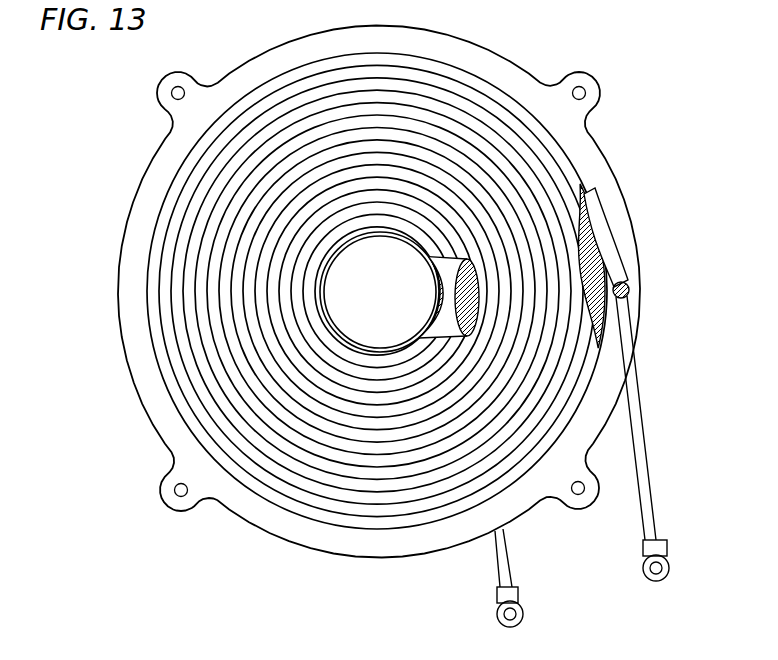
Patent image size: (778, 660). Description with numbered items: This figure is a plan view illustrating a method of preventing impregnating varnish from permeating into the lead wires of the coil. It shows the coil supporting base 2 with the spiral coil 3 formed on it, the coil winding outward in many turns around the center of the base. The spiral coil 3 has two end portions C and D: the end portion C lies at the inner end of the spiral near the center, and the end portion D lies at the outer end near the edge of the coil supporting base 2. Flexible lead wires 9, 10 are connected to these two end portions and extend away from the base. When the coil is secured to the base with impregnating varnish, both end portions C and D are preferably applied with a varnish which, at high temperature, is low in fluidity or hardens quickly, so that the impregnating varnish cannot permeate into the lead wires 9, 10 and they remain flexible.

The coil supporting base 2 is at (433, 42).
The spiral coil 3 is at (341, 122).
The end portion of the coil C is at (452, 255).
The end portion of the coil D is at (600, 228).
The lead wire with terminal 9 is at (647, 515).
The lead wire with terminal 10 is at (502, 557).